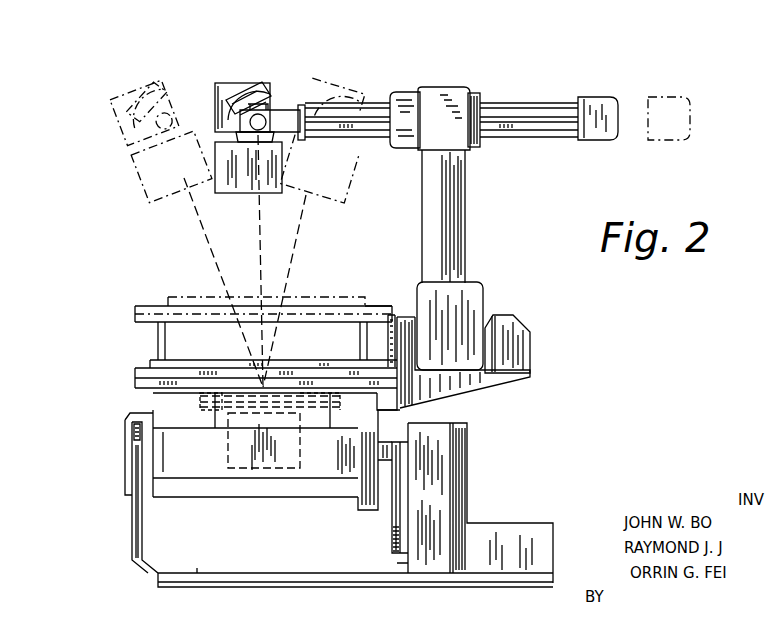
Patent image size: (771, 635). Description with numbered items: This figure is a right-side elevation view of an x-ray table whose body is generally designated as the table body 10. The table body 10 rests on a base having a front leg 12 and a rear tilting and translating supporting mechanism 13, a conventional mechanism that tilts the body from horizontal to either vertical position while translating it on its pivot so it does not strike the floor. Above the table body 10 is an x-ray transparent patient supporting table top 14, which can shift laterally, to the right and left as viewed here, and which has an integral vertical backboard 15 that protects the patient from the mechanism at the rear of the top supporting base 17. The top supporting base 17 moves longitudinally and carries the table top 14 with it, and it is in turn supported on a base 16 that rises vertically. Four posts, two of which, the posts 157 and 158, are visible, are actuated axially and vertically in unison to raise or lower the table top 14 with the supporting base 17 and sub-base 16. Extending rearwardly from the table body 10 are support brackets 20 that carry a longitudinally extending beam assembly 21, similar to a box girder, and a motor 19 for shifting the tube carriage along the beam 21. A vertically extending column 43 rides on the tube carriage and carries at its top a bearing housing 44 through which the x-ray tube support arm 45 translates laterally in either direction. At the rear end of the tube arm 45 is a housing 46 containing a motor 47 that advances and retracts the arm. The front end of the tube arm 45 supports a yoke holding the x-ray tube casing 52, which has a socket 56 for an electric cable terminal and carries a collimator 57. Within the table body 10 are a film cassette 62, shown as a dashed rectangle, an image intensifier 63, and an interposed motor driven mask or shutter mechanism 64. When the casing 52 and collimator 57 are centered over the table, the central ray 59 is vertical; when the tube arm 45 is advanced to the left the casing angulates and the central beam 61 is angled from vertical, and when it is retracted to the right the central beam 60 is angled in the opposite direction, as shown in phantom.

The table body 10 is at (122, 412).
The front leg 12 is at (138, 516).
The rear tilting and translating supporting mechanism 13 is at (455, 459).
The table top 14 is at (196, 298).
The backboard 15 is at (390, 353).
The base 16 is at (134, 318).
The top supporting base 17 is at (166, 306).
The motor 19 is at (510, 328).
The support brackets 20 is at (512, 377).
The beam assembly 21 is at (462, 290).
The column 43 is at (447, 210).
The bearing housing 44 is at (472, 96).
The x-ray tube support arm 45 is at (530, 105).
The housing 46 is at (612, 104).
The motor 47 is at (596, 102).
The x-ray tube casing 52 is at (226, 76).
The socket 56 is at (258, 80).
The collimator 57 is at (246, 178).
The central ray 59 is at (284, 252).
The central beam 60 is at (298, 230).
The central beam 61 is at (192, 222).
The film cassette 62 is at (206, 412).
The image intensifier 63 is at (232, 450).
The motor driven mask or shutter mechanism 64 is at (342, 398).
The post 157 is at (157, 344).
The post 158 is at (362, 336).